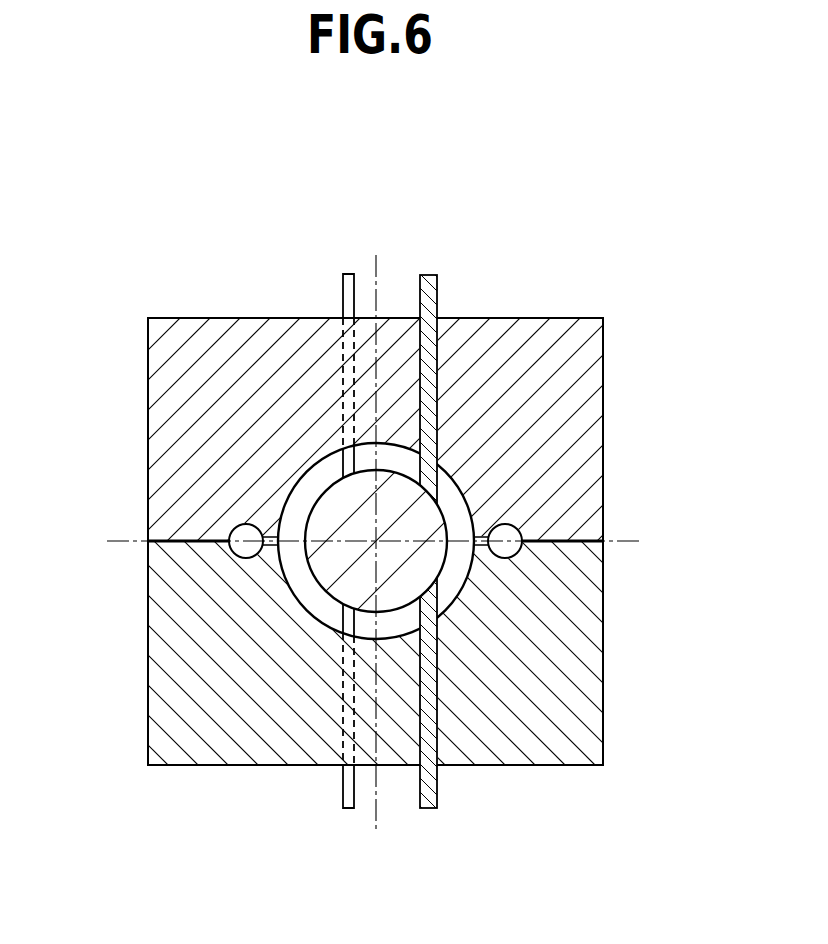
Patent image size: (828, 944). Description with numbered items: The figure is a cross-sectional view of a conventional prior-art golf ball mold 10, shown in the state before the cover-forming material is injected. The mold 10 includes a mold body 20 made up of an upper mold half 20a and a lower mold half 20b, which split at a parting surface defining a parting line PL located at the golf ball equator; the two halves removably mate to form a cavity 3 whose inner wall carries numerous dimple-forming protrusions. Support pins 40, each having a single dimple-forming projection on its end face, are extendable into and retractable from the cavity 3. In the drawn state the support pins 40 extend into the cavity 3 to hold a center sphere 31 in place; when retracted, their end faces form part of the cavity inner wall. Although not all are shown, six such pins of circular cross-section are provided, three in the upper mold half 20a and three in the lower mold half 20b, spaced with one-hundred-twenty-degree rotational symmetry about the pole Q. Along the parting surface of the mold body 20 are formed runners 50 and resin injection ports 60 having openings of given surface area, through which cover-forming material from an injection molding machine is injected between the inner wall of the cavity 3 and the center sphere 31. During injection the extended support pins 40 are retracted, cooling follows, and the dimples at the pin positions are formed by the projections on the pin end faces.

The mold 10 is at (145, 262).
The mold body 20 is at (410, 502).
The upper mold half 20a is at (595, 413).
The lower mold half 20b is at (597, 652).
The cavity 3 is at (455, 567).
The center sphere 31 is at (337, 503).
The support pins 40 is at (350, 283).
The runners 50 is at (243, 547).
The resin injection ports 60 is at (290, 530).
The parting line PL is at (138, 538).
The pole Q is at (397, 447).